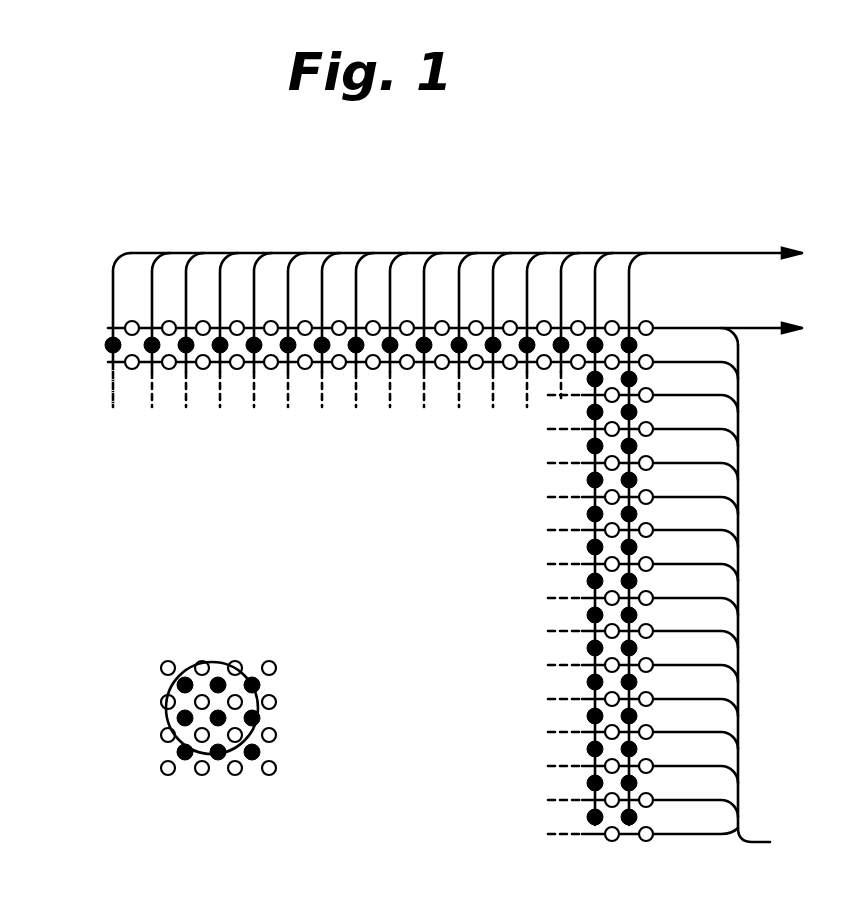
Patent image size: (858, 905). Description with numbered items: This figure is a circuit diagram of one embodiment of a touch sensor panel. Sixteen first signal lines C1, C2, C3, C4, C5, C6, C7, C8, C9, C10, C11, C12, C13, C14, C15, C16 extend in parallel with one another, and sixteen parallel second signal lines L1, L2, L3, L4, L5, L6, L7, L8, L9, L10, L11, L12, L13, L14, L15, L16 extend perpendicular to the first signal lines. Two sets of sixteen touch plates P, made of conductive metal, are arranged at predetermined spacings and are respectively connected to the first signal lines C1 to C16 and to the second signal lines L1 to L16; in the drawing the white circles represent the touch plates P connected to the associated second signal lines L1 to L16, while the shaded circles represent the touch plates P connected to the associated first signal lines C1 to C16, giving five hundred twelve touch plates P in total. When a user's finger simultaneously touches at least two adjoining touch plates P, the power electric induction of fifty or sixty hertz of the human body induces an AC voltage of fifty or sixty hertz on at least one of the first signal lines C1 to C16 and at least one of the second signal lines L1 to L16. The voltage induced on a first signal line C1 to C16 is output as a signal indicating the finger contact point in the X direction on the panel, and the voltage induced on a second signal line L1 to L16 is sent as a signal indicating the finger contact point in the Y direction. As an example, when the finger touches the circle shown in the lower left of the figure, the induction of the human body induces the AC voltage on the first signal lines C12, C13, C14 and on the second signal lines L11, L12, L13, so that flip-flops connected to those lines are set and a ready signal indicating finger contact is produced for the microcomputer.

The first signal line C1 is at (627, 270).
The first signal line C2 is at (593, 270).
The first signal line C3 is at (559, 270).
The first signal line C4 is at (525, 270).
The first signal line C5 is at (491, 270).
The first signal line C6 is at (457, 270).
The first signal line C7 is at (422, 270).
The first signal line C8 is at (388, 270).
The first signal line C9 is at (354, 270).
The first signal line C10 is at (320, 270).
The first signal line C11 is at (286, 270).
The first signal line C12 is at (252, 270).
The first signal line C13 is at (218, 270).
The first signal line C14 is at (184, 270).
The first signal line C15 is at (150, 270).
The first signal line C16 is at (113, 280).
The second signal line L1 is at (738, 345).
The second signal line L2 is at (738, 376).
The second signal line L3 is at (738, 404).
The second signal line L4 is at (738, 437).
The second signal line L5 is at (738, 474).
The second signal line L6 is at (738, 509).
The second signal line L7 is at (738, 541).
The second signal line L8 is at (738, 576).
The second signal line L9 is at (738, 607).
The second signal line L10 is at (738, 636).
The second signal line L11 is at (738, 672).
The second signal line L12 is at (738, 709).
The second signal line L13 is at (738, 742).
The second signal line L14 is at (738, 776).
The second signal line L15 is at (738, 803).
The second signal line L16 is at (752, 842).
The touch plate P is at (106, 352).